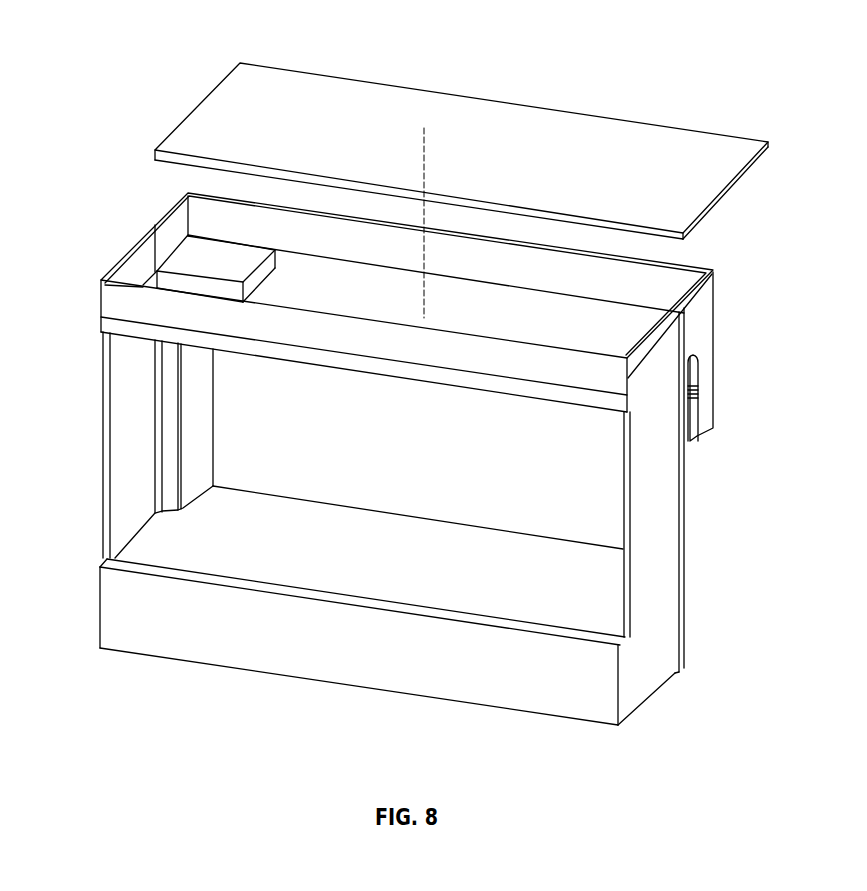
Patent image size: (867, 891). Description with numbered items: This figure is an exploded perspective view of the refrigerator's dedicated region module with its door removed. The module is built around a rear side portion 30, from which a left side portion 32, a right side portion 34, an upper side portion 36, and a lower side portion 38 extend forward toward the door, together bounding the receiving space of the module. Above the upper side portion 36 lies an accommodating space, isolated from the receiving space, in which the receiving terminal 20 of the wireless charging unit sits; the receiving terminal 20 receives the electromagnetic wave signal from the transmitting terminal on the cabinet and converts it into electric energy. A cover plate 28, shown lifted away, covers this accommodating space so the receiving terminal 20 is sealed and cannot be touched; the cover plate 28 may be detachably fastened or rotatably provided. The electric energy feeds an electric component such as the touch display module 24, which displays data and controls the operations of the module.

The receiving terminal 20 is at (205, 263).
The touch display module 24 is at (180, 620).
The cover plate 28 is at (525, 150).
The rear side portion 30 is at (267, 393).
The left side portion 32 is at (128, 440).
The right side portion 34 is at (643, 501).
The upper side portion 36 is at (583, 328).
The lower side portion 38 is at (235, 549).